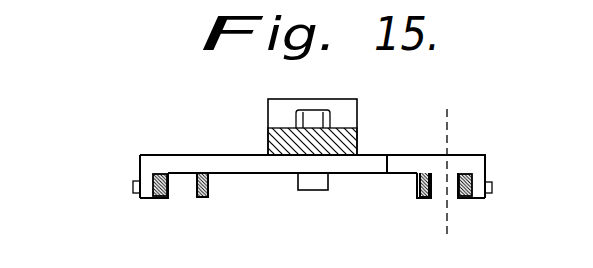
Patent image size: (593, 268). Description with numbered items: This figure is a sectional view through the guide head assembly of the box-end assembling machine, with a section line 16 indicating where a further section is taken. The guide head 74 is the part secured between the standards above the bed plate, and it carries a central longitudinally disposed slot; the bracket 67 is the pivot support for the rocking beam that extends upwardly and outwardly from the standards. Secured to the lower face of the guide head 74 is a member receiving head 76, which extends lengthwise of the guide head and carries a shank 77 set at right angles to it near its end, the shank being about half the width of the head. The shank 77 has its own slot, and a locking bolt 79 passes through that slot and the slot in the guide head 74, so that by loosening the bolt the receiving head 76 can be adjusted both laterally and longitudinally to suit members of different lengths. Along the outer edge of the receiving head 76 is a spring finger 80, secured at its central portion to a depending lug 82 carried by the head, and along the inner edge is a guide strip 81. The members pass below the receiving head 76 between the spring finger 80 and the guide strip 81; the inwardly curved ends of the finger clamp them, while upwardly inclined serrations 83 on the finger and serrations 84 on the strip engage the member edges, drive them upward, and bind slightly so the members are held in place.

The center line 16 is at (452, 169).
The bracket 67 is at (468, 162).
The guide head 74 is at (283, 141).
The member receiving head 76 is at (150, 162).
The shank 77 is at (289, 162).
The locking bolt 79 is at (314, 112).
The spring finger 80 is at (143, 177).
The guide strip 81 is at (210, 187).
The depending lug 82 is at (143, 191).
The serrations 83 is at (158, 198).
The serrations 84 is at (202, 198).